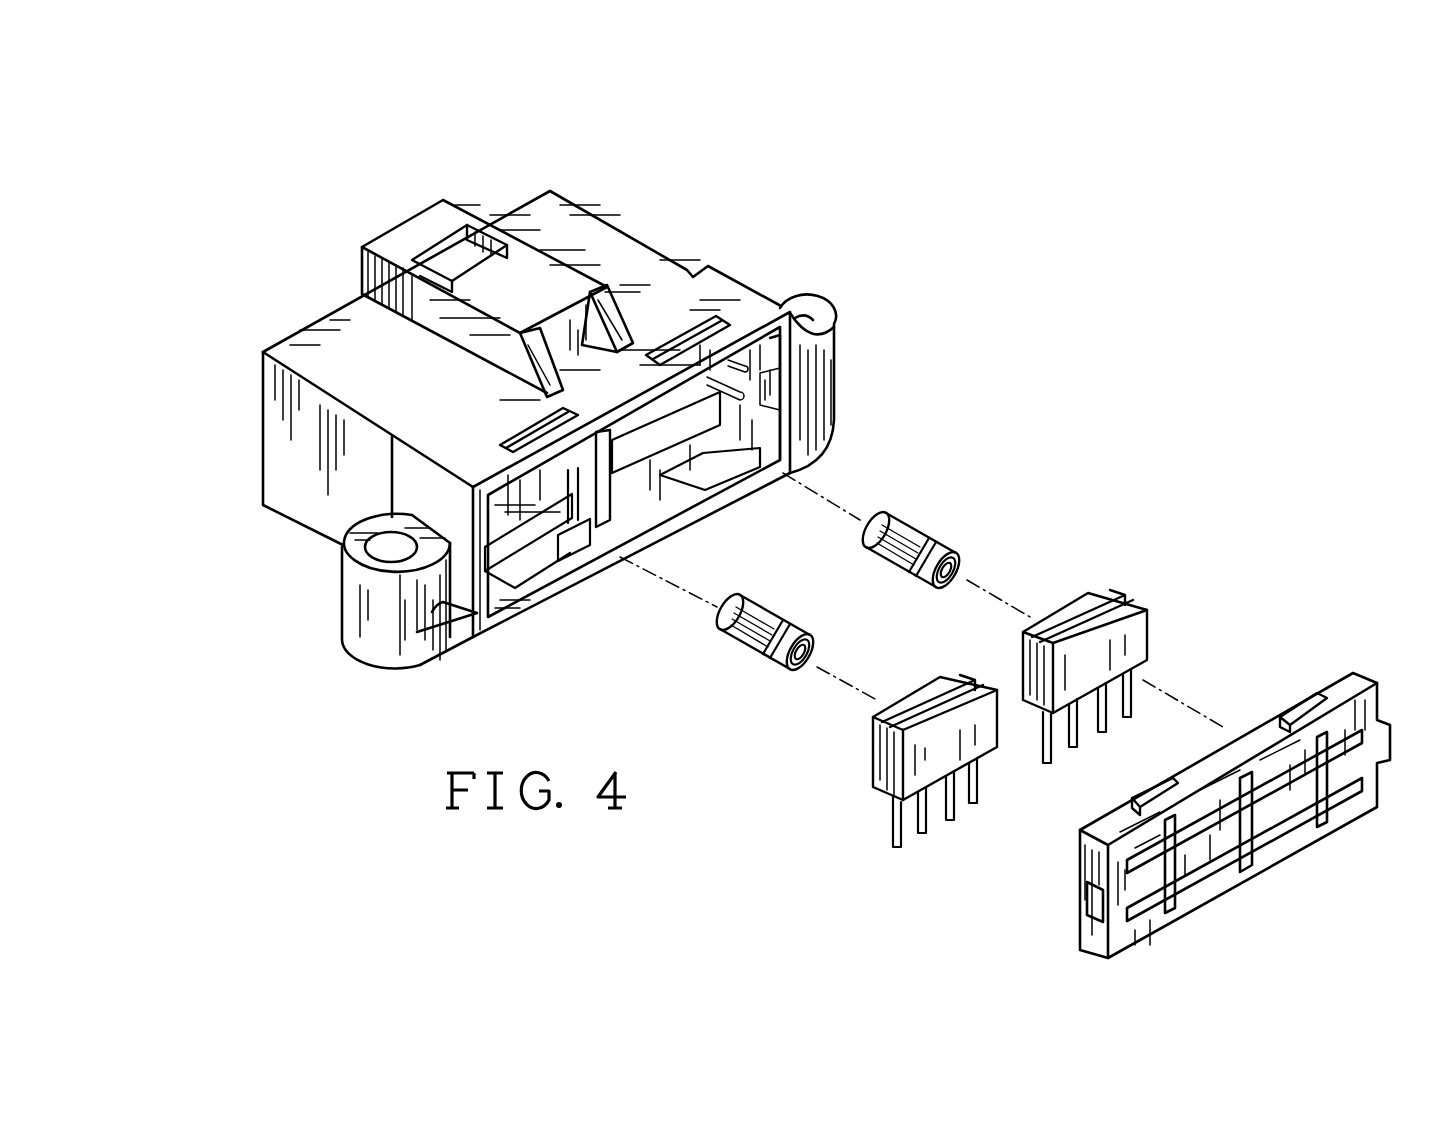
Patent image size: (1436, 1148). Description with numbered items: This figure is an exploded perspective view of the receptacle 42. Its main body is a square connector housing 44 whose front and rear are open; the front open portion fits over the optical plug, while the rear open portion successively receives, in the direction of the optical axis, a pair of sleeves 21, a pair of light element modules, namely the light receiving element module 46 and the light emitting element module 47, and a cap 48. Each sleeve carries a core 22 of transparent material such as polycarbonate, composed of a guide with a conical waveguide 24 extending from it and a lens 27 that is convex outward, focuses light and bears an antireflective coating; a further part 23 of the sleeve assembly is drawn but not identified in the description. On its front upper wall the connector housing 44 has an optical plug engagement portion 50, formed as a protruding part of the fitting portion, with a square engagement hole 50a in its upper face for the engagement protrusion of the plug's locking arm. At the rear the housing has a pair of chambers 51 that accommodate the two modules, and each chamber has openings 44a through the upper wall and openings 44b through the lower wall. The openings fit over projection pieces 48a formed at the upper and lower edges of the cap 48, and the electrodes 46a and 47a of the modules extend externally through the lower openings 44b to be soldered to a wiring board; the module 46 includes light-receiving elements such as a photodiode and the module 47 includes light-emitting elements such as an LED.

The sleeves 21 is at (912, 510).
The core 22 is at (950, 540).
The ferrule end 23 is at (795, 618).
The waveguide 24 is at (797, 672).
The lens 27 is at (962, 572).
The receptacle 42 is at (1022, 370).
The connector housing 44 is at (300, 527).
The opening 44a is at (680, 335).
The opening 44b is at (518, 568).
The light receiving element module 46 is at (870, 758).
The electrodes 46a is at (897, 848).
The light emitting element module 47 is at (1148, 613).
The electrodes 47a is at (1047, 765).
The cap 48 is at (1280, 863).
The projection pieces 48a is at (1300, 698).
The optical plug engagement portion 50 is at (405, 228).
The engagement hole 50a is at (462, 252).
The chambers 51 is at (600, 495).